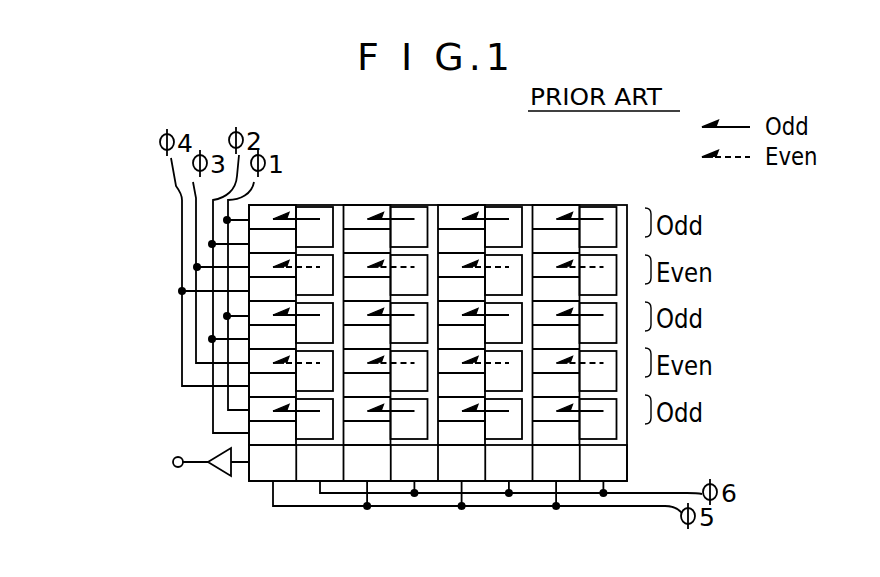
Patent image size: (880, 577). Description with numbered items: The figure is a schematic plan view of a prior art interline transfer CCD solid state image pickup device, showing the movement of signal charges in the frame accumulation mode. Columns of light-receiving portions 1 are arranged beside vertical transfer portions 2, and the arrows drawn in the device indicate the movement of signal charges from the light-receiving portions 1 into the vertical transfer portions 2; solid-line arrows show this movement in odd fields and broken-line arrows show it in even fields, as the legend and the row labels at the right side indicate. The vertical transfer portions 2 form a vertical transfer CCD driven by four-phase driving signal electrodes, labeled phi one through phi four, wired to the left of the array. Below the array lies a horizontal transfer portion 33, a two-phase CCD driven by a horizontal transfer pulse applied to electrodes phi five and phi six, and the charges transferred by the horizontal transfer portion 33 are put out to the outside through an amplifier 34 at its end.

The light-receiving portion 1 is at (323, 213).
The vertical transfer portion 2 is at (280, 203).
The horizontal transfer portion 33 is at (627, 458).
The amplifier 34 is at (222, 467).